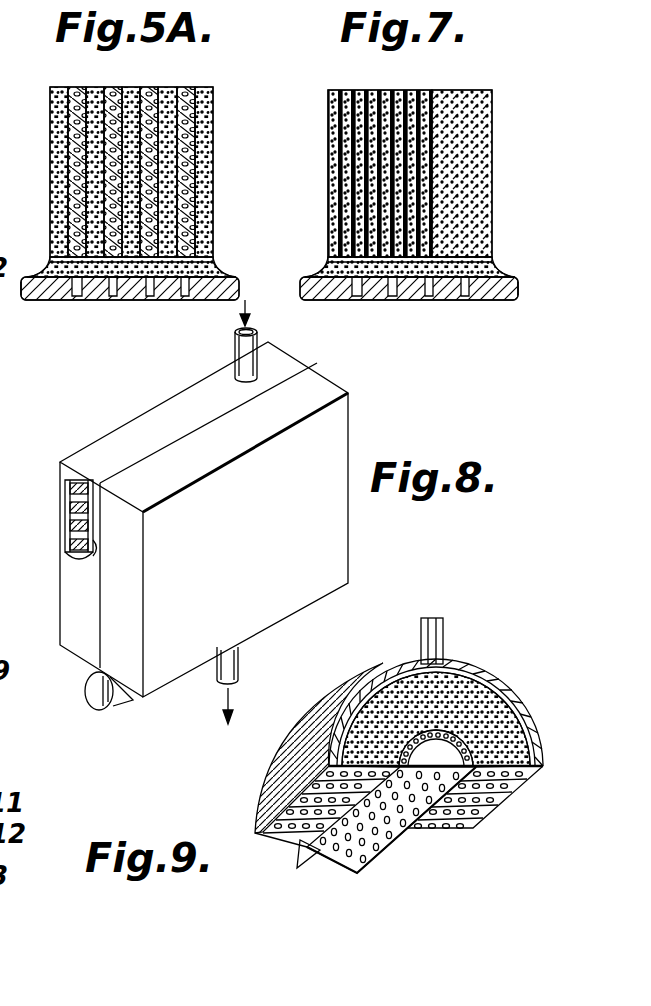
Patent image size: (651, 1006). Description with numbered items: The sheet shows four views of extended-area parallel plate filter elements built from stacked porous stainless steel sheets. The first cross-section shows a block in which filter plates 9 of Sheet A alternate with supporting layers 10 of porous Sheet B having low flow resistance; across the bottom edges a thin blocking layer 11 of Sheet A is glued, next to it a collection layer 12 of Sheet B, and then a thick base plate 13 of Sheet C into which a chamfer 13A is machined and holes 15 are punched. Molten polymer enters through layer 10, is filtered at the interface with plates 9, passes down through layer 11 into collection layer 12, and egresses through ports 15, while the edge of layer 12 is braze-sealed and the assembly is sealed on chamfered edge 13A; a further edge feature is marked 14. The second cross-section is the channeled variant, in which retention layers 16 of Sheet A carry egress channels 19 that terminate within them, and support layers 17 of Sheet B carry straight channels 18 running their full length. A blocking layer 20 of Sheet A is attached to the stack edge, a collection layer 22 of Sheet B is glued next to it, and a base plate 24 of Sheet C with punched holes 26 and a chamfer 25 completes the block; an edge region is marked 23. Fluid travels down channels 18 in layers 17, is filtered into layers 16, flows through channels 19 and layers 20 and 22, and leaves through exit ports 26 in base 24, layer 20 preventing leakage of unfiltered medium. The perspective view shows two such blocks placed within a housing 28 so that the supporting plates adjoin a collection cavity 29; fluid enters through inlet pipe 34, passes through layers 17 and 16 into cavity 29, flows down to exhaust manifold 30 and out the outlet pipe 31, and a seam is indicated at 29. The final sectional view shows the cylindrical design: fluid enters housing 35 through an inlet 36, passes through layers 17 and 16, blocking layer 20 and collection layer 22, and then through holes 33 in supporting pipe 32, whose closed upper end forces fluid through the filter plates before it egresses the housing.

In FIG. 5A, the filter plates 9 is at (173, 157).
In FIG. 5A, the supporting layer 10 is at (187, 88).
In FIG. 5A, the blocking layer 11 is at (213, 262).
In FIG. 5A, the collection layer 12 is at (50, 267).
In FIG. 5A, the base plate 13 is at (243, 292).
In FIG. 5A, the chamfer 13A is at (23, 279).
In FIG. 5A, the flared edge 14 is at (217, 274).
In FIG. 5A, the holes 15 is at (185, 299).
In FIG. 7, the retention layers 16 is at (370, 90).
In FIG. 8, the retention layers 16 is at (66, 486).
In FIG. 9, the retention layers 16 is at (500, 784).
In FIG. 7, the support layers 17 is at (462, 90).
In FIG. 8, the support layers 17 is at (68, 524).
In FIG. 9, the support layers 17 is at (476, 812).
In FIG. 7, the straight channels 18 is at (397, 153).
In FIG. 7, the straight channels 19 is at (375, 108).
In FIG. 7, the blocking layer 20 is at (494, 266).
In FIG. 8, the blocking layer 20 is at (100, 483).
In FIG. 9, the blocking layer 20 is at (455, 738).
In FIG. 7, the collection layer 22 is at (498, 277).
In FIG. 8, the collection layer 22 is at (97, 492).
In FIG. 9, the collection layer 22 is at (447, 718).
In FIG. 7, the flared edge 23 is at (318, 276).
In FIG. 7, the base plate 24 is at (333, 300).
In FIG. 7, the chamfer 25 is at (516, 283).
In FIG. 8, the chamfer 25 is at (88, 560).
In FIG. 7, the holes 26 is at (465, 300).
In FIG. 8, the holes 26 is at (104, 540).
In FIG. 8, the housing 28 is at (185, 403).
In FIG. 8, the collection cavity 29 is at (317, 363).
In FIG. 8, the exhaust manifold 30 is at (93, 702).
In FIG. 8, the outlet pipe 31 is at (220, 678).
In FIG. 9, the supporting pipe 32 is at (430, 725).
In FIG. 9, the holes 33 is at (343, 858).
In FIG. 8, the inlet pipe 34 is at (236, 352).
In FIG. 9, the housing 35 is at (512, 688).
In FIG. 9, the inlet tube 36 is at (443, 640).